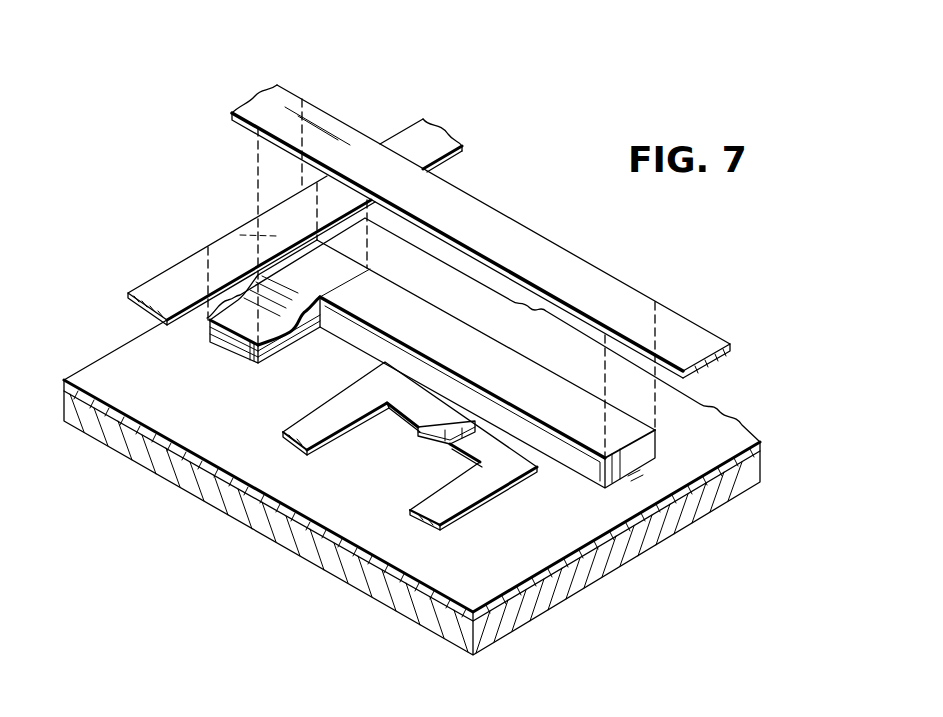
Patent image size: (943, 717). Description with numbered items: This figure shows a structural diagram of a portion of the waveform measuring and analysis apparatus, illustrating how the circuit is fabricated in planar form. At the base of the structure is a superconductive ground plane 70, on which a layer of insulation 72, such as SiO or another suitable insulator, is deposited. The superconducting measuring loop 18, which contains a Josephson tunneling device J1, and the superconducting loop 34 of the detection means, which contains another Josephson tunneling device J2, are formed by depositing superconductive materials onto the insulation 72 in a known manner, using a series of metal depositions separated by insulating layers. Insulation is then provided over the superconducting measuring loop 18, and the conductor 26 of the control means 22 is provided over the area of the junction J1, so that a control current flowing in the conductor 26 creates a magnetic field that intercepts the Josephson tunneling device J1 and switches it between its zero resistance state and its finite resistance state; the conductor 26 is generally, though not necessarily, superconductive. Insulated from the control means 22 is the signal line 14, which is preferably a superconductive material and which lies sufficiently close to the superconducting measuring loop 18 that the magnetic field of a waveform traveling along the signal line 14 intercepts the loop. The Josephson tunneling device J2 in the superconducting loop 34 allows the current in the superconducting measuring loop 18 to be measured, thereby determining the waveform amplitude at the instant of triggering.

The signal line 14 is at (616, 297).
The superconducting measuring loop 18 is at (490, 359).
The control means 22 is at (158, 264).
The conductor 26 is at (232, 250).
The superconducting loop 34 is at (390, 504).
The superconductive ground plane 70 is at (605, 563).
The layer of insulation 72 is at (547, 574).
The Josephson tunneling device J1 is at (268, 364).
The Josephson tunneling device J2 is at (419, 437).